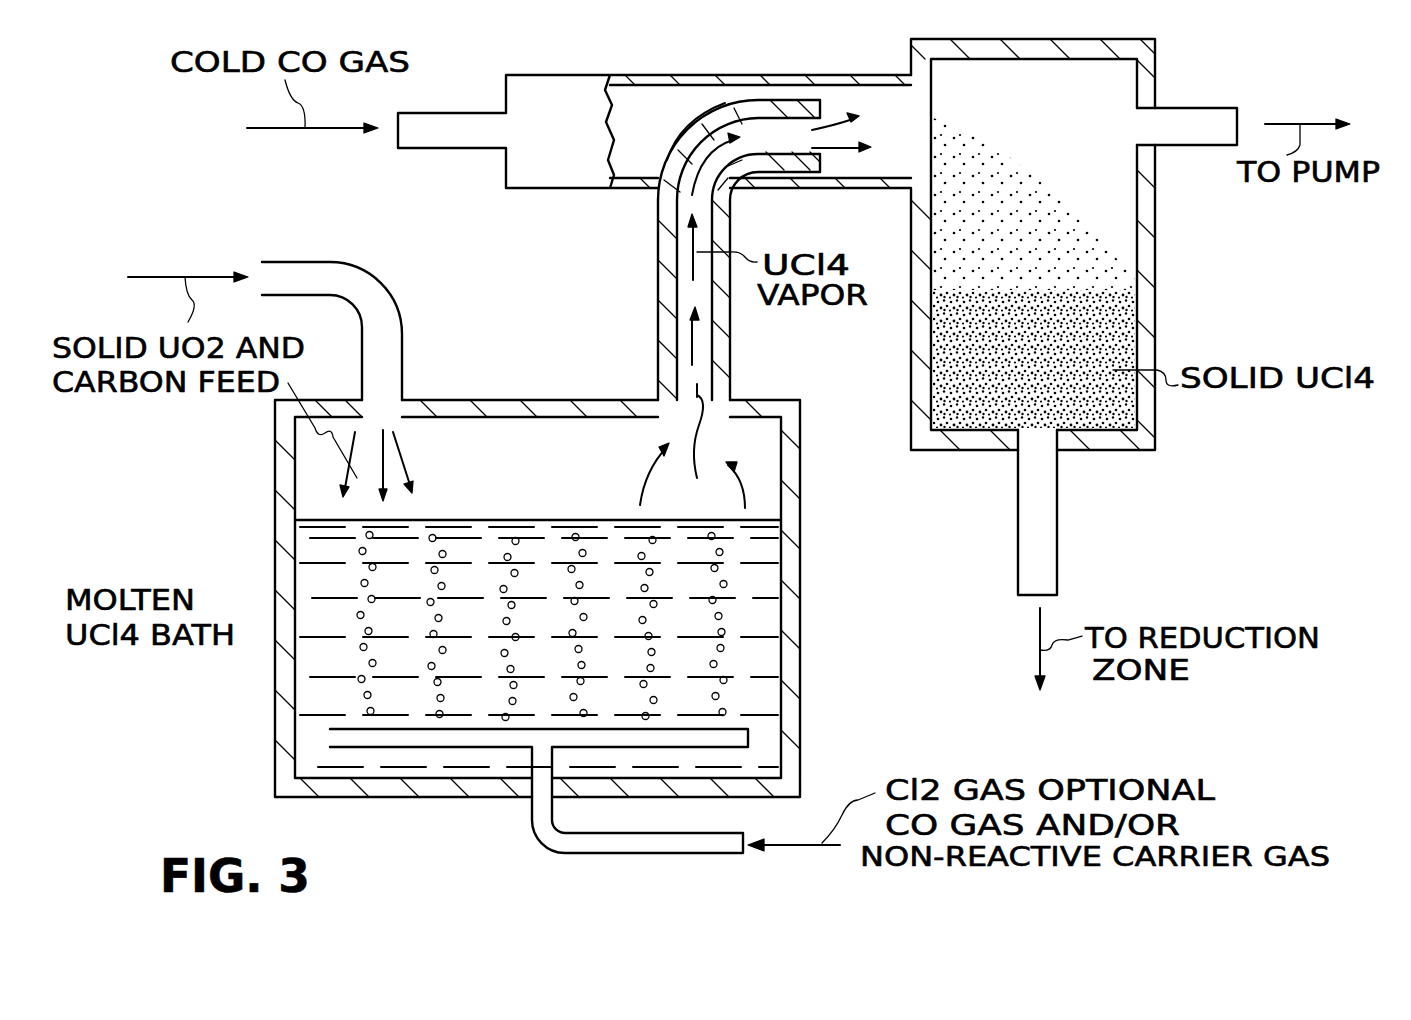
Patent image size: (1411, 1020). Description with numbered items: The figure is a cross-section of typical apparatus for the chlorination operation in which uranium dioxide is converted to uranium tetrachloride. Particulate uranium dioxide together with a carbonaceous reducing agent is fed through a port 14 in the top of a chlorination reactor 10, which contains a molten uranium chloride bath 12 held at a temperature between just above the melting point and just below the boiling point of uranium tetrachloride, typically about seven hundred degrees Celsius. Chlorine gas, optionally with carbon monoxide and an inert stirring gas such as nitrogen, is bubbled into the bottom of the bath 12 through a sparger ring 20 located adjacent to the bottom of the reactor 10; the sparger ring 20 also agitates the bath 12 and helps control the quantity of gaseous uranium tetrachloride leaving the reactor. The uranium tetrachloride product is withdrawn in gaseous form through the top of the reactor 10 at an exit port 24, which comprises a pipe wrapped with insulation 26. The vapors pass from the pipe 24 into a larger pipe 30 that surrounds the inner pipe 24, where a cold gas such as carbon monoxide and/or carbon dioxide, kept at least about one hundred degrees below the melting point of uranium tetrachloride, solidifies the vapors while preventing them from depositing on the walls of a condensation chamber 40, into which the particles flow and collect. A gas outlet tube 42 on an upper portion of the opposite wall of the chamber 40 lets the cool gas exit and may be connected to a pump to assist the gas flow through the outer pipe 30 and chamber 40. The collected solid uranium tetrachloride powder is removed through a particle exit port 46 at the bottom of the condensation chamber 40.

The chlorination reactor 10 is at (275, 490).
The molten uranium chloride bath 12 is at (330, 583).
The port 14 is at (402, 318).
The sparger ring 20 is at (748, 735).
The exit port 24 is at (690, 393).
The insulation 26 is at (657, 298).
The larger pipe 30 is at (582, 189).
The condensation chamber 40 is at (1155, 250).
The gas outlet tube 42 is at (1205, 108).
The particle exit port 46 is at (1057, 533).